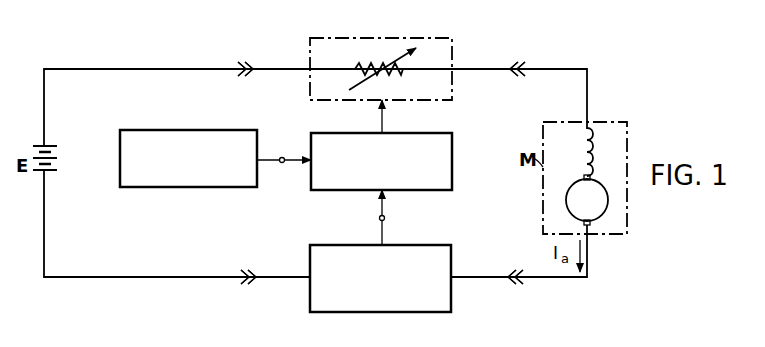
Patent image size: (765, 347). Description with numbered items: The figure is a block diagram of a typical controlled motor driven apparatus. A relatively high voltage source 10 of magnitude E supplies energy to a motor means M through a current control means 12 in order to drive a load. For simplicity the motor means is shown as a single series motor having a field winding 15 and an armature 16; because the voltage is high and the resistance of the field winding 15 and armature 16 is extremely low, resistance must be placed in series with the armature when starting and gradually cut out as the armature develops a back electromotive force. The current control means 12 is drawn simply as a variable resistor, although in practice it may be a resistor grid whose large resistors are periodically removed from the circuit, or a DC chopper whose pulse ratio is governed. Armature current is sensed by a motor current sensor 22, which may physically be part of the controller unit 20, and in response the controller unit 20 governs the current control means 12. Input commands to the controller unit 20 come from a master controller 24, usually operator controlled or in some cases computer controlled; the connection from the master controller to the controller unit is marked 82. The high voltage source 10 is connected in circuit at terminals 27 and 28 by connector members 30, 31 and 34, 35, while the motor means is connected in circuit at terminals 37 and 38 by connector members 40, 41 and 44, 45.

The high voltage source 10 is at (58, 160).
The current control means 12 is at (345, 38).
The field winding 15 is at (586, 145).
The armature 16 is at (567, 194).
The controller unit 20 is at (429, 214).
The motor current sensor 22 is at (343, 245).
The master controller 24 is at (161, 130).
The terminal 27 is at (242, 61).
The terminal 28 is at (245, 284).
The connector member 30 is at (254, 73).
The connector member 31 is at (239, 73).
The connector member 34 is at (256, 273).
The connector member 35 is at (241, 272).
The terminal 37 is at (547, 58).
The terminal 38 is at (512, 285).
The connector member 40 is at (511, 74).
The connector member 41 is at (522, 74).
The connector member 44 is at (506, 273).
The connector member 45 is at (519, 270).
The control signal connection 82 is at (284, 163).